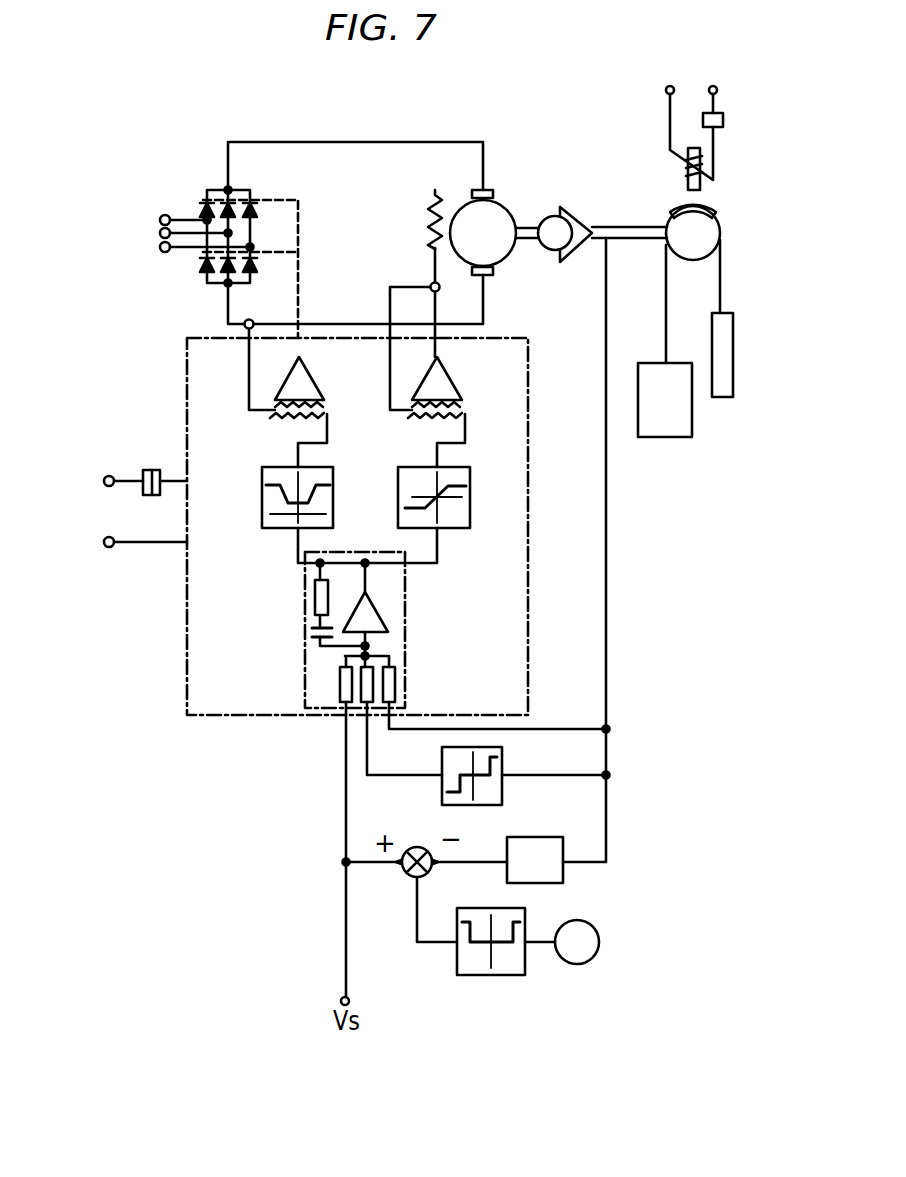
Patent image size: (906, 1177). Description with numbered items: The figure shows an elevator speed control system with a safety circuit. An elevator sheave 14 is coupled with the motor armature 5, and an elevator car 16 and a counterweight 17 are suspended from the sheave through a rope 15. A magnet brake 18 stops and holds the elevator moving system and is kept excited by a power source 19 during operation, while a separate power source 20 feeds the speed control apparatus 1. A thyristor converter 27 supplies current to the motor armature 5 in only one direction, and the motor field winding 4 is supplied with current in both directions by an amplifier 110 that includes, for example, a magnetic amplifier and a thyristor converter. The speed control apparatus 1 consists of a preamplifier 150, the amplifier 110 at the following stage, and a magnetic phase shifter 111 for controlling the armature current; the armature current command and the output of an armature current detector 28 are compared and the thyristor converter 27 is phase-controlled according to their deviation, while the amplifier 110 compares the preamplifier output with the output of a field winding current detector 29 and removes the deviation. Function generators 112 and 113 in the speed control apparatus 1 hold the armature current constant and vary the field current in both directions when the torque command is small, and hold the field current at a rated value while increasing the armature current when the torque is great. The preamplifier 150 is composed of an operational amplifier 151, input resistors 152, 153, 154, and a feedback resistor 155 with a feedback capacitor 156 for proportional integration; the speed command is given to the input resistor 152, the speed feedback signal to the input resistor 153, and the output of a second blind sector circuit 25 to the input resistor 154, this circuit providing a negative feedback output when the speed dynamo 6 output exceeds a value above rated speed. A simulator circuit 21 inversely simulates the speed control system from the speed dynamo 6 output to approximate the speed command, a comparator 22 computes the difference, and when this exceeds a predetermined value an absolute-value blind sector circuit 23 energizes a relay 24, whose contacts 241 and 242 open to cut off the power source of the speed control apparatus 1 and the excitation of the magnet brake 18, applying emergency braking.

The speed control apparatus 1 is at (187, 362).
The motor field winding 4 is at (428, 222).
The motor armature 5 is at (497, 197).
The speed dynamo 6 is at (565, 213).
The elevator sheave 14 is at (703, 235).
The rope 15 is at (666, 297).
The elevator car 16 is at (692, 415).
The counterweight 17 is at (733, 358).
The magnet brake 18 is at (712, 190).
The power source 19 is at (691, 119).
The power source 20 is at (132, 511).
The simulator circuit 21 is at (563, 875).
The comparator 22 is at (415, 848).
The absolute-value blind sector circuit 23 is at (468, 975).
The relay 24 is at (599, 947).
The second blind sector circuit 25 is at (502, 787).
The thyristor converter 27 is at (244, 190).
The armature current detector 28 is at (258, 300).
The field winding current detector 29 is at (439, 290).
The amplifier 110 is at (456, 383).
The magnetic phase shifter 111 is at (318, 383).
The function generator 112 is at (470, 494).
The function generator 113 is at (333, 494).
The preamplifier 150 is at (405, 612).
The operational amplifier 151 is at (375, 605).
The input resistor 152 is at (340, 680).
The input resistor 153 is at (395, 685).
The input resistor 154 is at (370, 667).
The feedback resistor 155 is at (315, 600).
The feedback capacitor 156 is at (312, 640).
The relay contact 241 is at (149, 468).
The relay contact 242 is at (723, 118).